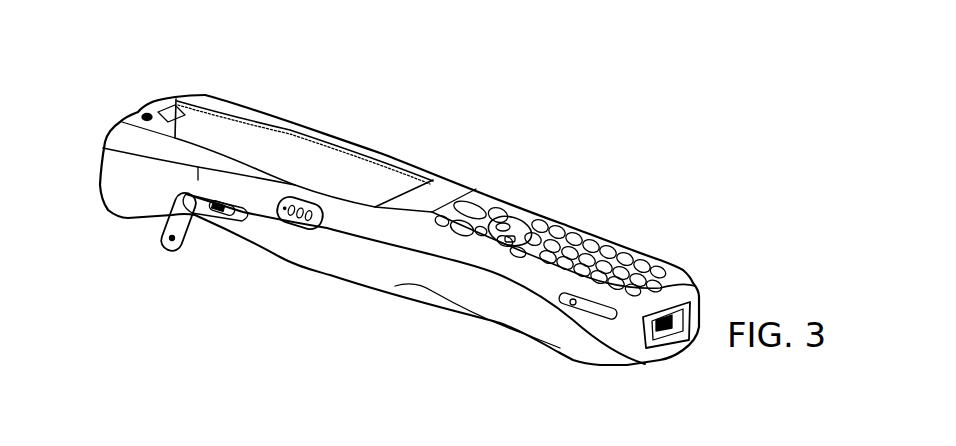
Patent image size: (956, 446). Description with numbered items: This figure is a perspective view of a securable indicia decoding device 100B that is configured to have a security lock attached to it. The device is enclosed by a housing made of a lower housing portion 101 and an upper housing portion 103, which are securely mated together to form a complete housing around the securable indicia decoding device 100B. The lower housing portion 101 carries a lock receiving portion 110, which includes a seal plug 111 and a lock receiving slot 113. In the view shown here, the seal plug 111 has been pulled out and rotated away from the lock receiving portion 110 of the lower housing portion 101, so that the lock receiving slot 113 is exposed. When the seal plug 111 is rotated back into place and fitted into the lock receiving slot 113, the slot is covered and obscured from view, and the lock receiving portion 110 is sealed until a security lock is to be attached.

The securable indicia decoding device 100B is at (409, 220).
The lower housing portion 101 is at (330, 274).
The upper housing portion 103 is at (363, 146).
The lock receiving portion 110 is at (151, 294).
The seal plug 111 is at (171, 261).
The lock receiving slot 113 is at (225, 210).